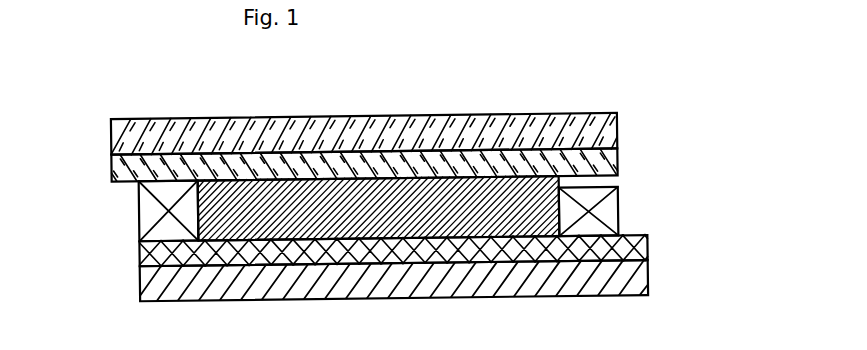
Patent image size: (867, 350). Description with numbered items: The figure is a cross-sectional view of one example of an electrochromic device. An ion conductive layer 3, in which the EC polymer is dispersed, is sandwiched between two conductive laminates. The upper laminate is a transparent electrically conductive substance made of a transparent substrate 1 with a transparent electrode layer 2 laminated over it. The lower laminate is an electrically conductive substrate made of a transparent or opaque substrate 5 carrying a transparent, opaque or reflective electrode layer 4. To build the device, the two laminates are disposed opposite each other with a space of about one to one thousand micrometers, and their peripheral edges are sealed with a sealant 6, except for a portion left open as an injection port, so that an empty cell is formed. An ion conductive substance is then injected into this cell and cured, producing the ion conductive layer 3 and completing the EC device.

The transparent substrate 1 is at (618, 130).
The transparent electrode layer 2 is at (618, 158).
The ion conductive layer 3 is at (618, 185).
The transparent, opaque or reflective electrode layer 4 is at (647, 248).
The transparent or opaque substrate 5 is at (647, 278).
The sealant 6 is at (155, 216).